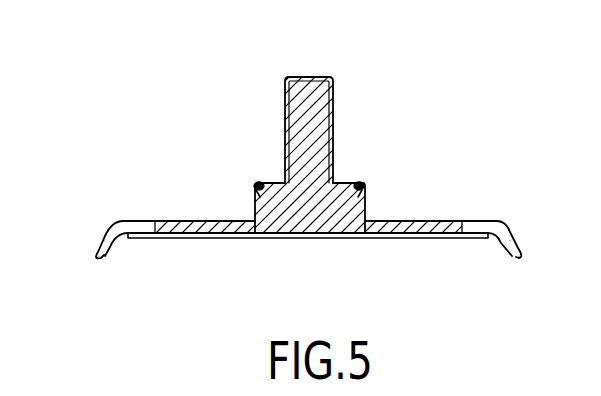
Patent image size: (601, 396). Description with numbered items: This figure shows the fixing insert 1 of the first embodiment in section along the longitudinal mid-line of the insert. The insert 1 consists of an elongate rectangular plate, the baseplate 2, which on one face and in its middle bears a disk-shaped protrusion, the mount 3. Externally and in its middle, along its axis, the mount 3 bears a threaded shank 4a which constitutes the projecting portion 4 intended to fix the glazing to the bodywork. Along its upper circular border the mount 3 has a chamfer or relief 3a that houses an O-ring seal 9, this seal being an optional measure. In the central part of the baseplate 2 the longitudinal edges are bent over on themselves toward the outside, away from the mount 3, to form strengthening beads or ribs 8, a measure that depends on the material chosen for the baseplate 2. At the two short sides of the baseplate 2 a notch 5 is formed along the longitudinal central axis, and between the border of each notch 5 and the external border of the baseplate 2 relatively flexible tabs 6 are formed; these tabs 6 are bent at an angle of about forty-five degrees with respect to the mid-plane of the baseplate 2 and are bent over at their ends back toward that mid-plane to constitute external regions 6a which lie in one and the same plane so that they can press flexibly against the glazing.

The insert 1 is at (360, 112).
The baseplate 2 is at (416, 221).
The mount 3 is at (255, 200).
The chamfer or relief 3a is at (349, 200).
The projecting portion 4 is at (313, 77).
The shank 4a is at (286, 112).
The notch 5 is at (477, 223).
The flexible tab 6 is at (119, 246).
The external region 6a is at (98, 258).
The strengthening bead or rib 8 is at (277, 238).
The O-ring seal 9 is at (357, 189).